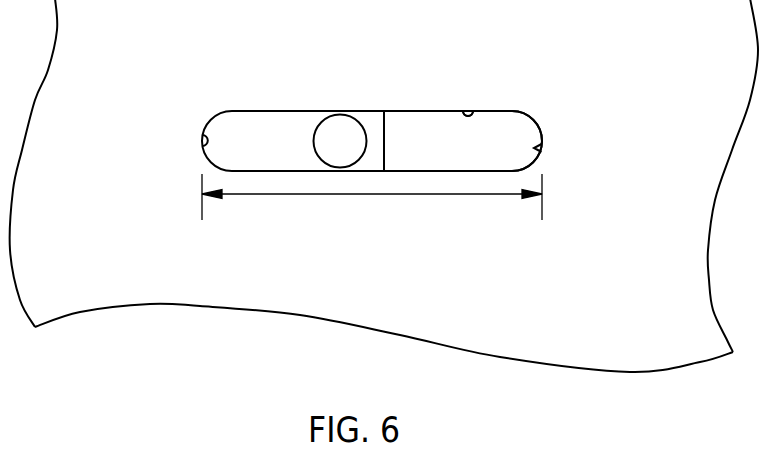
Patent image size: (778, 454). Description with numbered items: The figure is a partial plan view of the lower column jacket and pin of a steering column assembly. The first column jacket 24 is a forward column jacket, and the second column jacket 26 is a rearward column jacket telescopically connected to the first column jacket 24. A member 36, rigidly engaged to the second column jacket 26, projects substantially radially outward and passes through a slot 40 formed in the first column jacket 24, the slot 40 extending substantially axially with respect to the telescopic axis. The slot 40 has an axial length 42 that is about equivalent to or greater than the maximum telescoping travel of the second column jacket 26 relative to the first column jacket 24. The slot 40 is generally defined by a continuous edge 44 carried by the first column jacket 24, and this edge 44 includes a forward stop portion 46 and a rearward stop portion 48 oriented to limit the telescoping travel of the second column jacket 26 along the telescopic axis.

The first column jacket 24 is at (673, 352).
The second column jacket 26 is at (273, 130).
The member 36 is at (348, 127).
The slot 40 is at (456, 154).
The axial length 42 is at (401, 194).
The edge 44 is at (472, 114).
The forward stop portion 46 is at (540, 150).
The rearward stop portion 48 is at (202, 136).